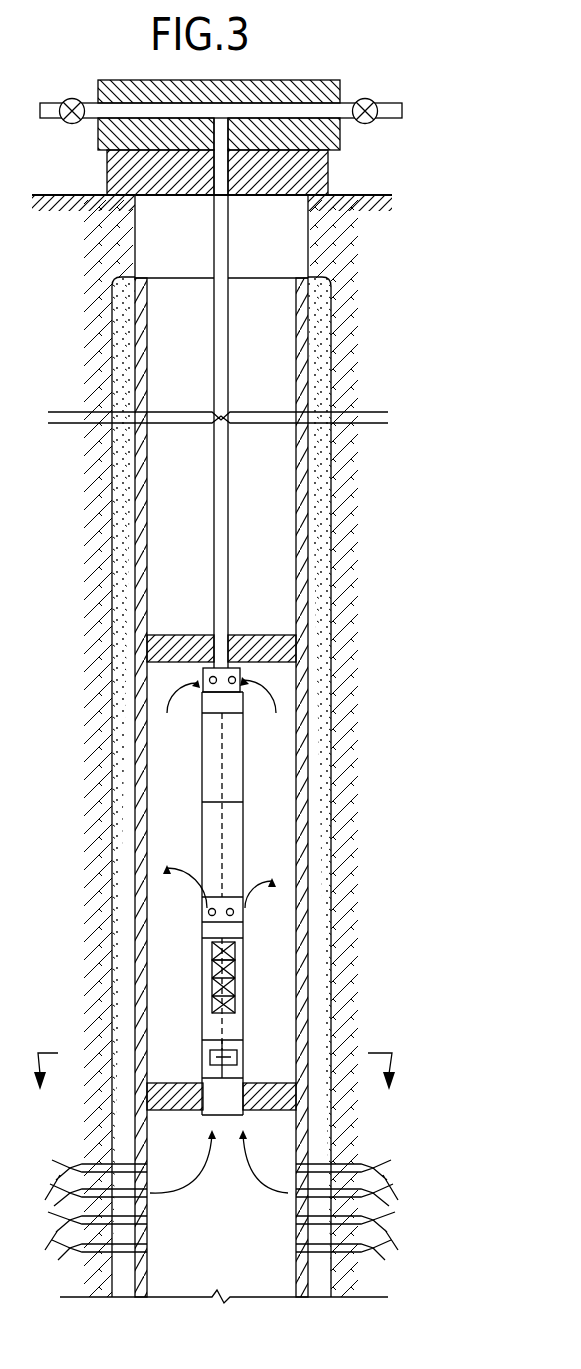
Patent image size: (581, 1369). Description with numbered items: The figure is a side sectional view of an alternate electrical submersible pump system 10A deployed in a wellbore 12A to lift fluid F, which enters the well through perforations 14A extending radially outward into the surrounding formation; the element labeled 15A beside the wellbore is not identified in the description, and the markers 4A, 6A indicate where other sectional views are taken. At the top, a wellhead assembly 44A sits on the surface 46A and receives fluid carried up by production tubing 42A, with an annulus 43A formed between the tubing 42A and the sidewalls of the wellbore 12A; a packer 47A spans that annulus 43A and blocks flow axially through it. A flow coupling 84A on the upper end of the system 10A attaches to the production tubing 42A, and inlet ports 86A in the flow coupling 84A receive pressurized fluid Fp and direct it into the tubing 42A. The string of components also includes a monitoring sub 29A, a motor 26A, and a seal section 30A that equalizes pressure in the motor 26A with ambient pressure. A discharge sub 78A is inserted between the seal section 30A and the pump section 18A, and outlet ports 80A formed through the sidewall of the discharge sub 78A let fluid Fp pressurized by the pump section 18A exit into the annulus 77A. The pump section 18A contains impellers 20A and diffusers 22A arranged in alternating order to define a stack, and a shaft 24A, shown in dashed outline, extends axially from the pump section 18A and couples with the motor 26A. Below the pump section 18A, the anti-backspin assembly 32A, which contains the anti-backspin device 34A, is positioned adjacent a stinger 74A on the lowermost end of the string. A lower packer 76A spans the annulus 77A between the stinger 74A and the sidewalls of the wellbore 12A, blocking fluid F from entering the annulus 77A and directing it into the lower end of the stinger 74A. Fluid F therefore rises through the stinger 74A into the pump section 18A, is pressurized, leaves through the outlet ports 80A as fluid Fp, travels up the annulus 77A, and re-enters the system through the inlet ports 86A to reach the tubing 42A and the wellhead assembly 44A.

The wellhead assembly 44A is at (327, 68).
The surface 46A is at (352, 195).
The production tubing 42A is at (230, 387).
The wellbore 12A is at (158, 305).
The ESP system 10A is at (170, 671).
The annulus 43A is at (268, 565).
The packer 47A is at (268, 632).
The pressurized fluid Fp is at (272, 665).
The flow coupling 84A is at (250, 682).
The inlet ports 86A is at (199, 690).
The monitoring sub 29A is at (203, 713).
The motor 26A is at (243, 745).
The shaft 24A is at (232, 827).
The seal section 30A is at (243, 863).
The discharge sub 78A is at (256, 913).
The outlet ports 80A is at (206, 912).
The pump section 18A is at (243, 935).
The impellers 20A is at (213, 947).
The diffusers 22A is at (213, 973).
The annulus 77A is at (172, 1003).
The anti-backspin assembly 32A is at (254, 1040).
The anti-backspin device 34A is at (210, 1056).
The lower packer 76A is at (270, 1083).
The stinger 74A is at (194, 1119).
The fluid F is at (253, 1180).
The perforations 14A is at (343, 1157).
The formation 15A is at (16, 855).
The section line 4A is at (224, 1069).
The section line 6A is at (220, 1088).